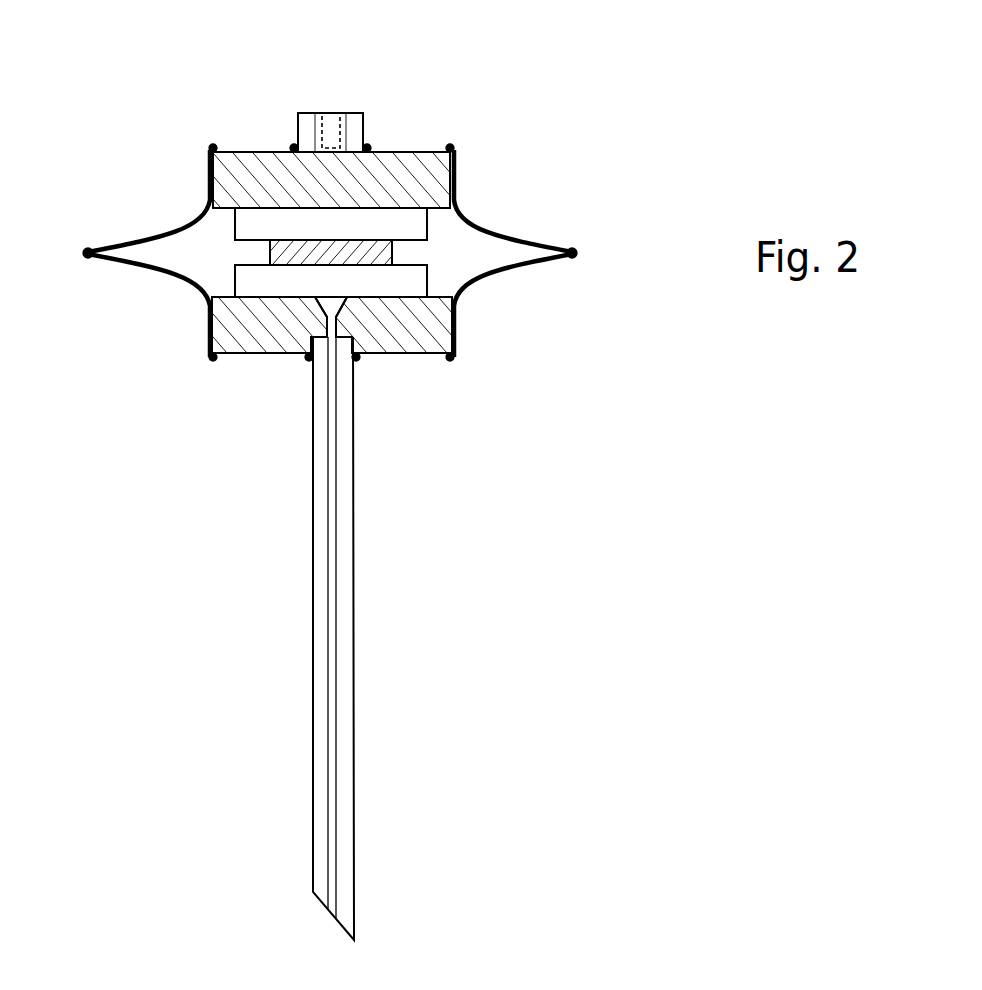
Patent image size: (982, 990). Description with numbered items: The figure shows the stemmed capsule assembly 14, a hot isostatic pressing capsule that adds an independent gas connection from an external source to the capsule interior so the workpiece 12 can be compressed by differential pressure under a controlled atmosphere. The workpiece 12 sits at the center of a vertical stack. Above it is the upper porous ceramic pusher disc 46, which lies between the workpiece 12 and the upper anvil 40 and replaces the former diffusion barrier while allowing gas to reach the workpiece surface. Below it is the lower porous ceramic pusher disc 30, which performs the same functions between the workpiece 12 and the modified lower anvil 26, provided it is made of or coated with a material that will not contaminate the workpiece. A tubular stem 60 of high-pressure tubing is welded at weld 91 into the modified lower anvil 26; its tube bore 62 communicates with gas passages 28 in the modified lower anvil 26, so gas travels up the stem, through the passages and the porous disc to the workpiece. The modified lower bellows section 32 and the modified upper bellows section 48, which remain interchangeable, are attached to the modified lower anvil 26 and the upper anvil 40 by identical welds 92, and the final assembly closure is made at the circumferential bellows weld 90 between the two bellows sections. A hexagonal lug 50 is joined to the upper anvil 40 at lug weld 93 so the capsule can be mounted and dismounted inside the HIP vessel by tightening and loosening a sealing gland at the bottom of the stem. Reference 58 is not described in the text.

The stemmed capsule assembly 14 is at (162, 201).
The welds 92 is at (219, 143).
The lug weld 93 is at (290, 143).
The hexagonal lug 50 is at (305, 112).
The cap recess 58 is at (330, 127).
The upper anvil 40 is at (378, 182).
The upper porous ceramic pusher disc 46 is at (402, 220).
The modified upper bellows section 48 is at (488, 227).
The modified lower bellows section 32 is at (512, 273).
The workpiece 12 is at (368, 255).
The lower porous ceramic pusher disc 30 is at (402, 282).
The modified lower anvil 26 is at (408, 338).
The gas passages 28 is at (338, 307).
The tubular stem 60 is at (342, 573).
The tube bore 62 is at (332, 658).
The circumferential bellows weld 90 is at (88, 259).
The weld 91 is at (307, 360).